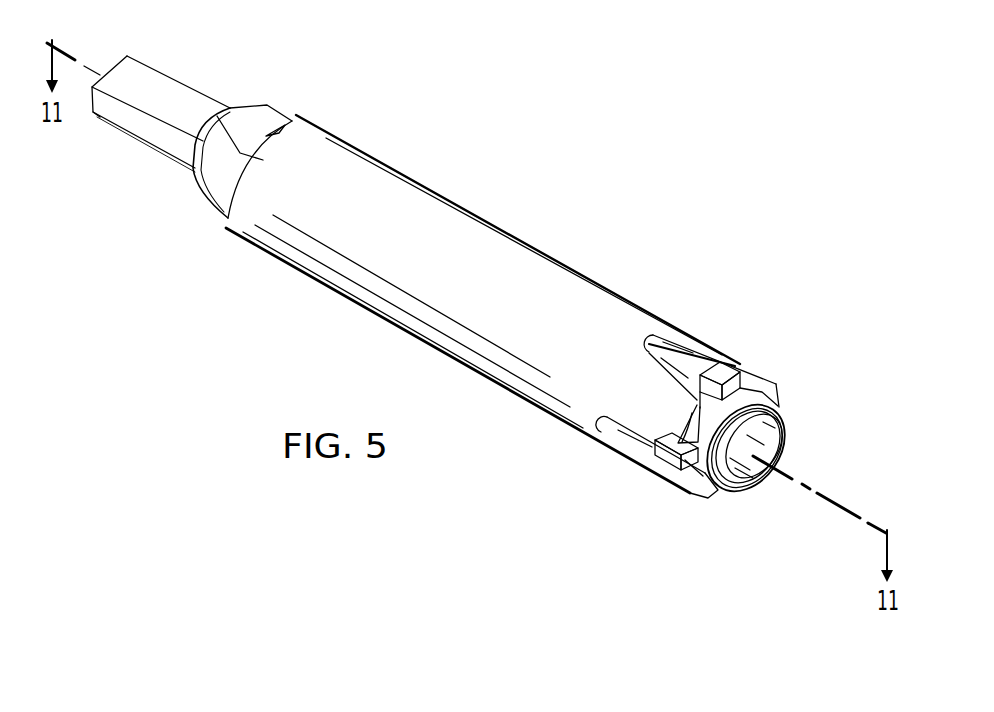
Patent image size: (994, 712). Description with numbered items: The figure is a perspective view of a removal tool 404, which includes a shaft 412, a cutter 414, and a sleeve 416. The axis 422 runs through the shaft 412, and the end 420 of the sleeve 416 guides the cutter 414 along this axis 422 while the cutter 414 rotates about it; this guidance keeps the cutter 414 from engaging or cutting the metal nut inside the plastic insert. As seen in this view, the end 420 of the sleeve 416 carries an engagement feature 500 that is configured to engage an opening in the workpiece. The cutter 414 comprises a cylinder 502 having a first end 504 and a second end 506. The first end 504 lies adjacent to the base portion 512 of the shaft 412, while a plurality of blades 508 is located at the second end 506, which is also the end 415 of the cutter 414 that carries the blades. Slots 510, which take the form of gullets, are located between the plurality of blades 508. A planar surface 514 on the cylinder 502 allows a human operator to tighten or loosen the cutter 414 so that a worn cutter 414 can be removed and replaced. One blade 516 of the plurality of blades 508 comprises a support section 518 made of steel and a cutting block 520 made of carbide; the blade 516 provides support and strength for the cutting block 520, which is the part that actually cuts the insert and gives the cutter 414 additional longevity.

The removal tool 404 is at (452, 192).
The shaft 412 is at (163, 80).
The base portion 512 is at (192, 196).
The planar surface 514 is at (297, 121).
The cylinder 502 is at (377, 157).
The cutter 414 is at (533, 246).
The first end 504 is at (222, 228).
The slots 510 is at (672, 336).
The plurality of blades 508 is at (730, 349).
The cutting block 520 is at (741, 370).
The second end 506 is at (712, 502).
The end 415 is at (689, 427).
The blade 516 is at (633, 478).
The support section 518 is at (599, 431).
The engagement feature 500 is at (762, 489).
The sleeve 416 is at (781, 414).
The end 420 is at (783, 442).
The axis 422 is at (843, 510).